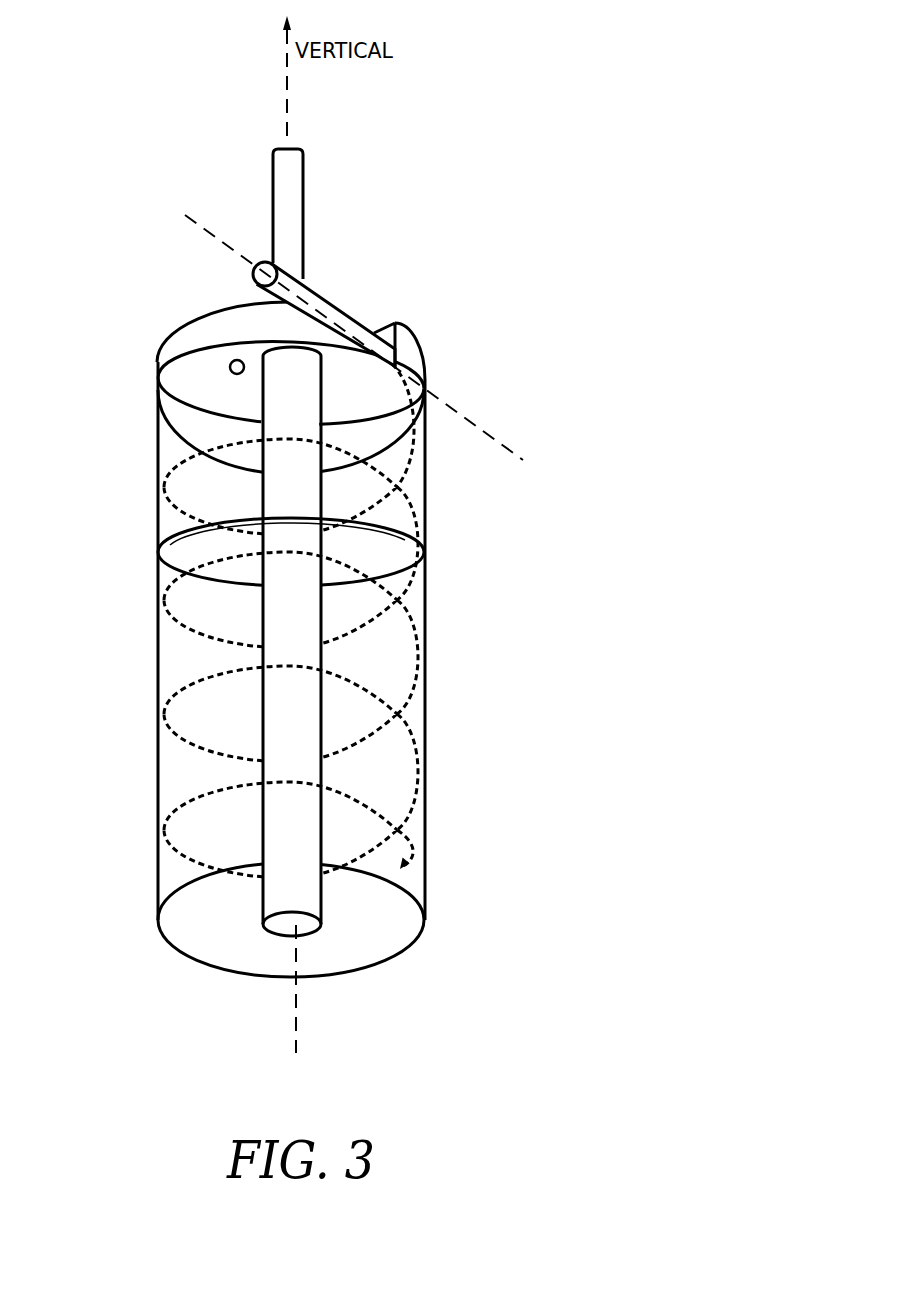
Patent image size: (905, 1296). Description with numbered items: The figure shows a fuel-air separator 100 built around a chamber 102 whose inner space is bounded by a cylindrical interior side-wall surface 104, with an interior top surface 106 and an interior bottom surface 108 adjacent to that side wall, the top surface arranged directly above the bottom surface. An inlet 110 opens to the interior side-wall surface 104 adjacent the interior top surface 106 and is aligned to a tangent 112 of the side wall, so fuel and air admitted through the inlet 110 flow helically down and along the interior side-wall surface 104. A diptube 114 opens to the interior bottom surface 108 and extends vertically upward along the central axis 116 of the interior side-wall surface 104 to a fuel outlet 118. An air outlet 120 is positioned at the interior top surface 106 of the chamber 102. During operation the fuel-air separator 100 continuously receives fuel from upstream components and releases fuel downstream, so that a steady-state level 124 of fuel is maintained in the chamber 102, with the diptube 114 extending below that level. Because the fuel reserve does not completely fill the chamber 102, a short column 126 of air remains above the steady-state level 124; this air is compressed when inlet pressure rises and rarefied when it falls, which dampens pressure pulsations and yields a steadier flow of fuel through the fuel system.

The fuel-air separator 100 is at (332, 577).
The chamber 102 is at (449, 878).
The interior side-wall surface 104 is at (168, 665).
The interior top surface 106 is at (208, 372).
The interior bottom surface 108 is at (183, 912).
The inlet 110 is at (324, 294).
The tangent 112 is at (478, 428).
The diptube 114 is at (321, 598).
The central axis 116 is at (297, 1028).
The fuel outlet 118 is at (273, 205).
The air outlet 120 is at (236, 360).
The steady-state level 124 is at (424, 545).
The column of air 126 is at (170, 523).